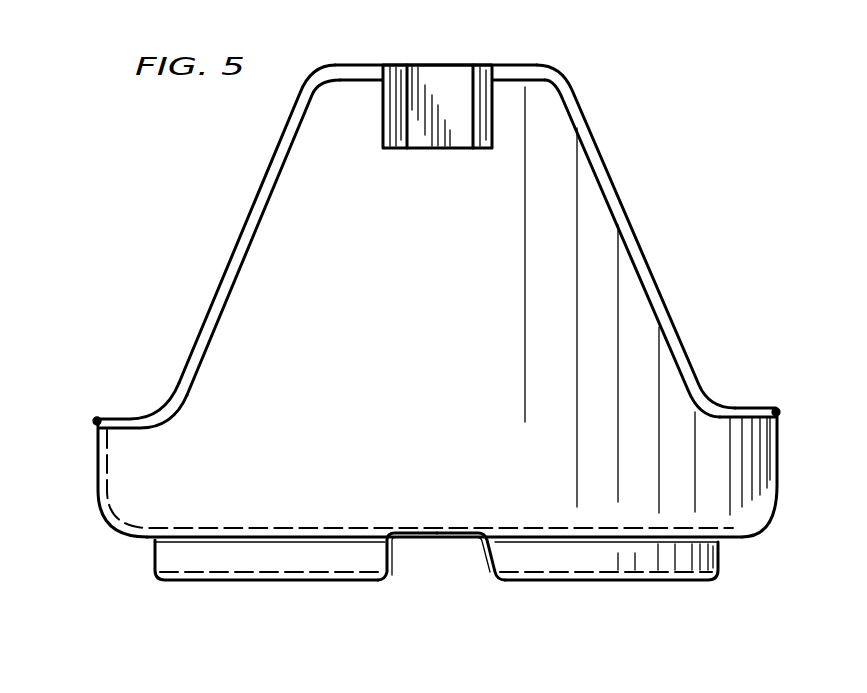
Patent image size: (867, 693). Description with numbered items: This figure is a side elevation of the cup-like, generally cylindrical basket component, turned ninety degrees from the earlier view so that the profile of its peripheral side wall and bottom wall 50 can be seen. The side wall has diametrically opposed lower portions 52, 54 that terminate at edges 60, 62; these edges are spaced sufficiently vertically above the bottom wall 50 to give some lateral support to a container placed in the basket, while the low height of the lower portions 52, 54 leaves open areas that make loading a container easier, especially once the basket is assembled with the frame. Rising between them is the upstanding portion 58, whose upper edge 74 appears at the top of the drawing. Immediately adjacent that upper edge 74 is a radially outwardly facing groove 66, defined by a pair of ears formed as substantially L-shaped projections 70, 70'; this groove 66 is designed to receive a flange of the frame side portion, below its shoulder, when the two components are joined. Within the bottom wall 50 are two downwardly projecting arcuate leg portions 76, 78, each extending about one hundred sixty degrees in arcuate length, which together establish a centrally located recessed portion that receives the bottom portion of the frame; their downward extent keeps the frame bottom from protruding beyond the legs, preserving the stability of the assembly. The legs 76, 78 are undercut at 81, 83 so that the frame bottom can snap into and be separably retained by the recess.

The bottom wall 50 is at (280, 530).
The lower portion 52 is at (97, 468).
The lower portion 54 is at (778, 460).
The upstanding portion 58 is at (293, 185).
The edge 60 is at (98, 415).
The edge 62 is at (772, 408).
The groove 66 is at (452, 80).
The L-shaped projection 70 is at (366, 106).
The L-shaped projection 70' is at (523, 88).
The upper edge 74 is at (355, 65).
The leg portion 76 is at (237, 585).
The leg portion 78 is at (568, 582).
The undercut 81 is at (385, 582).
The undercut 83 is at (490, 582).